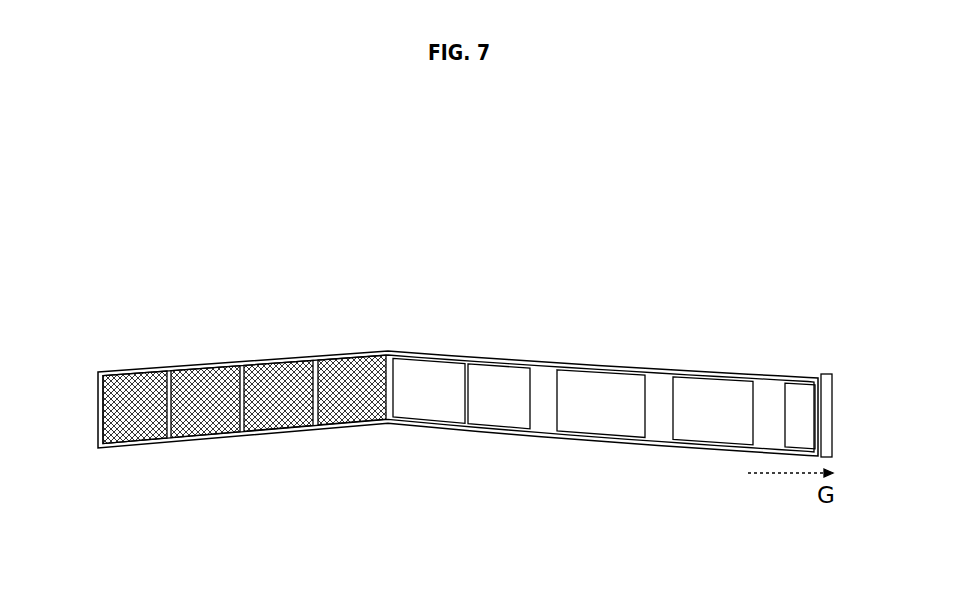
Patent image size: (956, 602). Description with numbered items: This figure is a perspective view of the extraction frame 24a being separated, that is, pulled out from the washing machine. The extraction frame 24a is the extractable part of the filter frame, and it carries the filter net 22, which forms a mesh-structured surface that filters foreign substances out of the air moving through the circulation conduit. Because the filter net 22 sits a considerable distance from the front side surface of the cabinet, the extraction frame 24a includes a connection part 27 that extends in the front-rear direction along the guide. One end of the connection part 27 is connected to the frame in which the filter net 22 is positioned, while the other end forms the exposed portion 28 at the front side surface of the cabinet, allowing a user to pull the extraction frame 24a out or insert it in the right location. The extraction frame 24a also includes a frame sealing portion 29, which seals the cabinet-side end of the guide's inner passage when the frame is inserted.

The filter net 22 is at (128, 412).
The extraction frame 24a is at (818, 353).
The connection part 27 is at (805, 357).
The exposed portion 28 is at (832, 422).
The frame sealing portion 29 is at (803, 380).